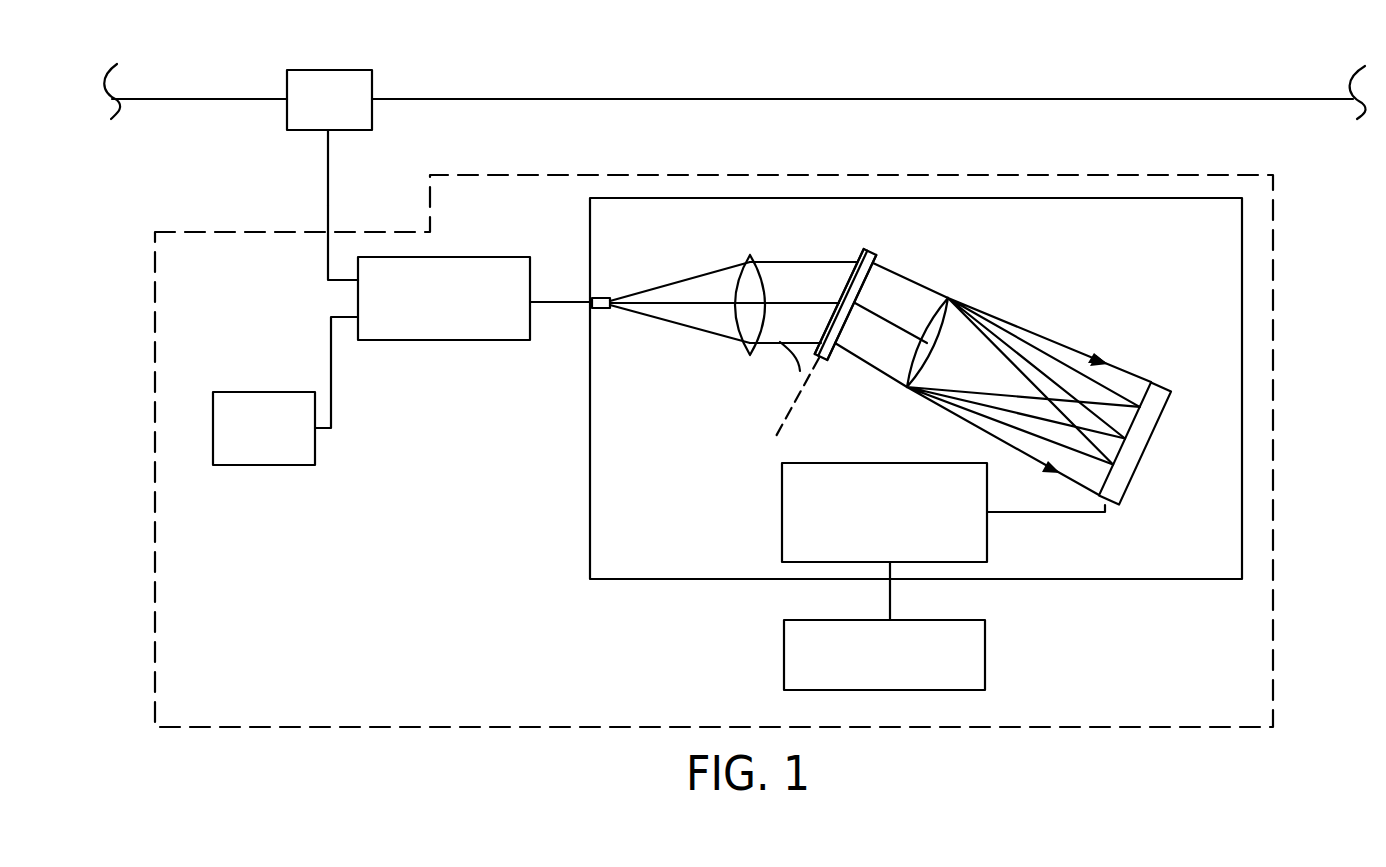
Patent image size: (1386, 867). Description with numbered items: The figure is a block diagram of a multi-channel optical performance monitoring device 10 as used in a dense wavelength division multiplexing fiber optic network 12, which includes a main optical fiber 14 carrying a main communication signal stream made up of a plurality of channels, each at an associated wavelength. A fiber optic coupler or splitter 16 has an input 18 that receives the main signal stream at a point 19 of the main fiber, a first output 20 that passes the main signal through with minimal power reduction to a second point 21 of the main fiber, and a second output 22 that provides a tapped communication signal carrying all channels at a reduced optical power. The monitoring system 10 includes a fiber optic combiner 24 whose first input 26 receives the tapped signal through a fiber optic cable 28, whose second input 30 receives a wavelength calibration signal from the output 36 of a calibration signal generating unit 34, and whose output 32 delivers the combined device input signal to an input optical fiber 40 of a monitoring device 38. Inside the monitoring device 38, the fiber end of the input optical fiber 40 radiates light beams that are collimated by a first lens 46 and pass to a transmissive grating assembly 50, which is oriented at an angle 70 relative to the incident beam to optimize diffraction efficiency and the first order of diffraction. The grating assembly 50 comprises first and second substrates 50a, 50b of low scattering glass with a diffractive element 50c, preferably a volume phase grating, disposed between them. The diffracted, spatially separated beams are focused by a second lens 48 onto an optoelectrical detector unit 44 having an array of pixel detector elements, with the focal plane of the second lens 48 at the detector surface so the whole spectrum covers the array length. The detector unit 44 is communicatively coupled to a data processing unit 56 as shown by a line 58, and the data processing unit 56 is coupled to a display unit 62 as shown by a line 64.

The multi-channel optical performance monitoring device 10 is at (1273, 376).
The fiber optic network 12 is at (1108, 77).
The main optical fiber 14 is at (860, 99).
The splitter 16 is at (306, 70).
The input 18 is at (285, 103).
The point 19 is at (233, 99).
The first output 20 is at (377, 97).
The second point 21 is at (498, 99).
The second output 22 is at (323, 130).
The fiber optic combiner 24 is at (433, 340).
The first input 26 is at (358, 287).
The fiber optic cable 28 is at (328, 230).
The second input 30 is at (357, 320).
The output 32 is at (532, 300).
The calibration signal generating unit 34 is at (236, 465).
The output 36 is at (320, 428).
The monitoring device 38 is at (1130, 579).
The input optical fiber 40 is at (588, 305).
The optoelectrical detector unit 44 is at (1142, 430).
The first lens 46 is at (750, 256).
The second lens 48 is at (948, 298).
The transmissive grating assembly 50 is at (870, 250).
The first substrate 50a is at (845, 288).
The second substrate 50b is at (760, 352).
The diffractive element 50c is at (845, 340).
The data processing unit 56 is at (782, 527).
The line 58 is at (1017, 512).
The display unit 62 is at (985, 668).
The line 64 is at (890, 600).
The angle 70 is at (797, 362).